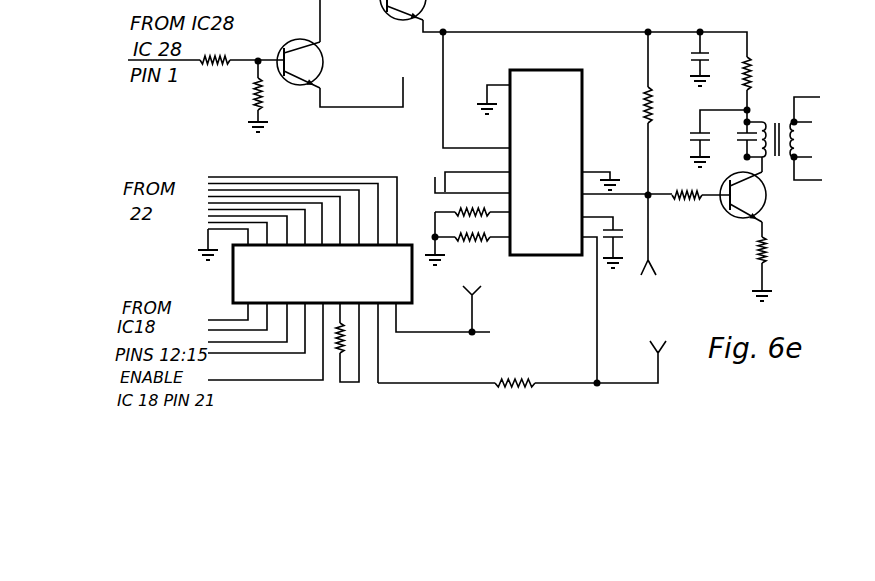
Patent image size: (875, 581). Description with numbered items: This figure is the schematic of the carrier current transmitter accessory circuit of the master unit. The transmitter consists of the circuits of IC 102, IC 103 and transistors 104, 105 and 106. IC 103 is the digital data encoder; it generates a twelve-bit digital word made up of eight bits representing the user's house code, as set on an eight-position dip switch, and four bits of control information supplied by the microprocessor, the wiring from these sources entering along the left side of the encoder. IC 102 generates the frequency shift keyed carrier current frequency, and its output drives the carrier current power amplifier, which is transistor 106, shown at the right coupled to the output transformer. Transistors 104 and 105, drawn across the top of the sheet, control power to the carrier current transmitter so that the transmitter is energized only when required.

The IC 102 is at (555, 168).
The digital data encoder 103 is at (337, 282).
The transistor 104 is at (322, 62).
The transistor 105 is at (427, 8).
The transistor 106 is at (768, 203).